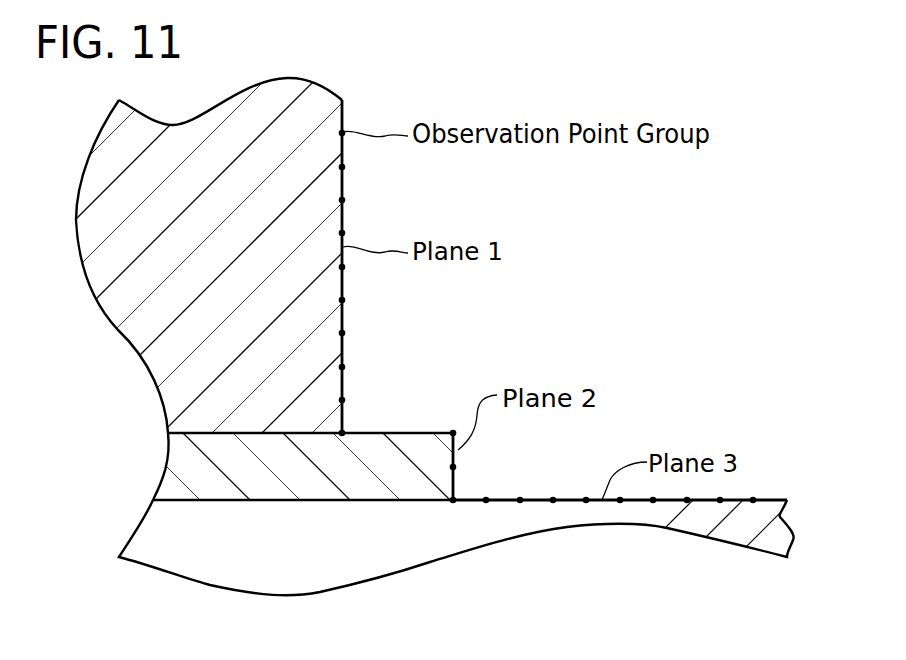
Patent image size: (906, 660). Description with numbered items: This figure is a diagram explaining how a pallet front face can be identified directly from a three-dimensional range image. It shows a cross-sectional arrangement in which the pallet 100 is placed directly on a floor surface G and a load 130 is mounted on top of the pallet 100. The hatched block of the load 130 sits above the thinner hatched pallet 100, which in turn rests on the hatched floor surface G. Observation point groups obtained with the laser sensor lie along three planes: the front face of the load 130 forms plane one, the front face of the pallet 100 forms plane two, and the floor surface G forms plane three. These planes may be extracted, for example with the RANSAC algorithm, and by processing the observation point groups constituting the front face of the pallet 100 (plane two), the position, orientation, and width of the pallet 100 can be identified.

The load 130 is at (142, 341).
The pallet 100 is at (182, 457).
The floor surface G is at (480, 535).